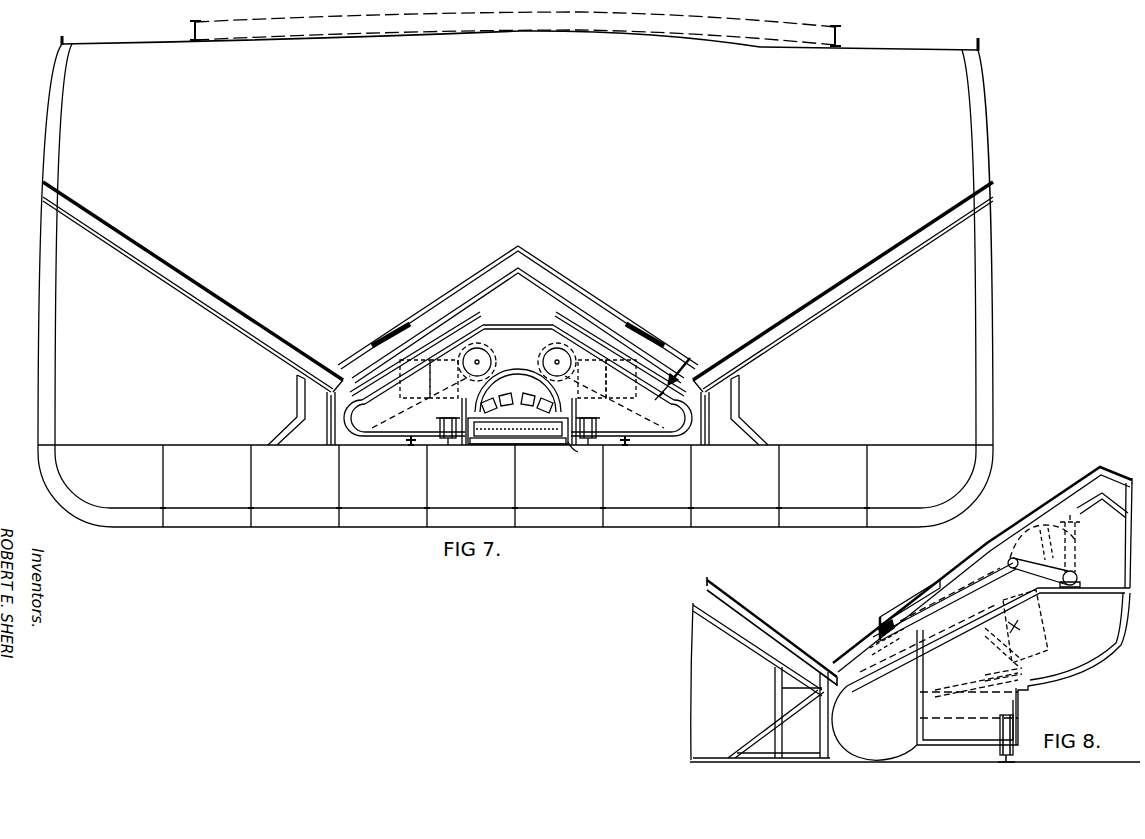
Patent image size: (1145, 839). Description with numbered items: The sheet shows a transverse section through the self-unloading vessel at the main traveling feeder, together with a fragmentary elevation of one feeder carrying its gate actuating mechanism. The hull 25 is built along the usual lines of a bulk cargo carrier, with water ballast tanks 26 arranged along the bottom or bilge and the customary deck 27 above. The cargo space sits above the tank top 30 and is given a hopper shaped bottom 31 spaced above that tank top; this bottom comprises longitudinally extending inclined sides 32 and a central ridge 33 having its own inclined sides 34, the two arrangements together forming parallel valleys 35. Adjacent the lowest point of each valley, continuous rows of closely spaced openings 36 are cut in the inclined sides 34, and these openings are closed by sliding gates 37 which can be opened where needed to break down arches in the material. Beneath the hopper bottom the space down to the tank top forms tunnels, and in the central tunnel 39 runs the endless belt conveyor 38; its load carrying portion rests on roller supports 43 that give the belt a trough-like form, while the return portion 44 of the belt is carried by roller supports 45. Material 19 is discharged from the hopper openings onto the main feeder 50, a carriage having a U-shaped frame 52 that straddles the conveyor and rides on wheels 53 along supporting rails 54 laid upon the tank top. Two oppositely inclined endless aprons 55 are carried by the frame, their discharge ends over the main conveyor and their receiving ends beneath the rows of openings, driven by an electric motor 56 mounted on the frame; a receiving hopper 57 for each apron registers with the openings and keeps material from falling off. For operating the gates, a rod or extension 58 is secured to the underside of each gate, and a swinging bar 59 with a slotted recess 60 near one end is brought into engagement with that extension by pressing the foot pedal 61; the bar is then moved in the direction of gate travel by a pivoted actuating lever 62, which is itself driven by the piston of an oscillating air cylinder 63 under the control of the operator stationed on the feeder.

In FIG. 7, the material being handled 19 is at (686, 378).
In FIG. 7, the hull 25 is at (998, 250).
In FIG. 7, the water ballast tanks 26 is at (190, 460).
In FIG. 7, the deck 27 is at (869, 45).
In FIG. 7, the tank top 30 is at (810, 445).
In FIG. 7, the hopper shaped bottom 31 is at (745, 348).
In FIG. 7, the inclined sides 32 is at (200, 284).
In FIG. 7, the central ridge 33 is at (521, 247).
In FIG. 7, the inclined sides of ridge 34 is at (492, 263).
In FIG. 7, the parallel valleys 35 is at (518, 300).
In FIG. 7, the spaced openings 36 is at (687, 361).
In FIG. 7, the sliding gates 37 is at (357, 396).
In FIG. 8, the sliding gates 37 is at (855, 652).
In FIG. 7, the endless belt conveyor 38 is at (498, 408).
In FIG. 7, the central tunnel 39 is at (518, 308).
In FIG. 7, the roller supports 43 is at (535, 430).
In FIG. 7, the return portion of conveyor belt 44 is at (478, 438).
In FIG. 7, the roller supports 45 is at (500, 440).
In FIG. 7, the main feeder 50 is at (475, 340).
In FIG. 7, the U-shaped frame 52 is at (522, 326).
In FIG. 8, the U-shaped frame 52 is at (1093, 588).
In FIG. 7, the wheels 53 is at (600, 438).
In FIG. 7, the supporting rails 54 is at (586, 446).
In FIG. 7, the endless conveyors or aprons 55 is at (612, 356).
In FIG. 7, the electric motor 56 is at (375, 350).
In FIG. 7, the receiving hopper 57 is at (348, 400).
In FIG. 8, the rod or extension 58 is at (902, 618).
In FIG. 8, the swinging bar 59 is at (958, 598).
In FIG. 8, the slotted recess 60 is at (876, 628).
In FIG. 8, the foot pedal 61 is at (1024, 668).
In FIG. 8, the pivoted actuating lever 62 is at (1018, 562).
In FIG. 8, the oscillating air cylinder 63 is at (1032, 620).